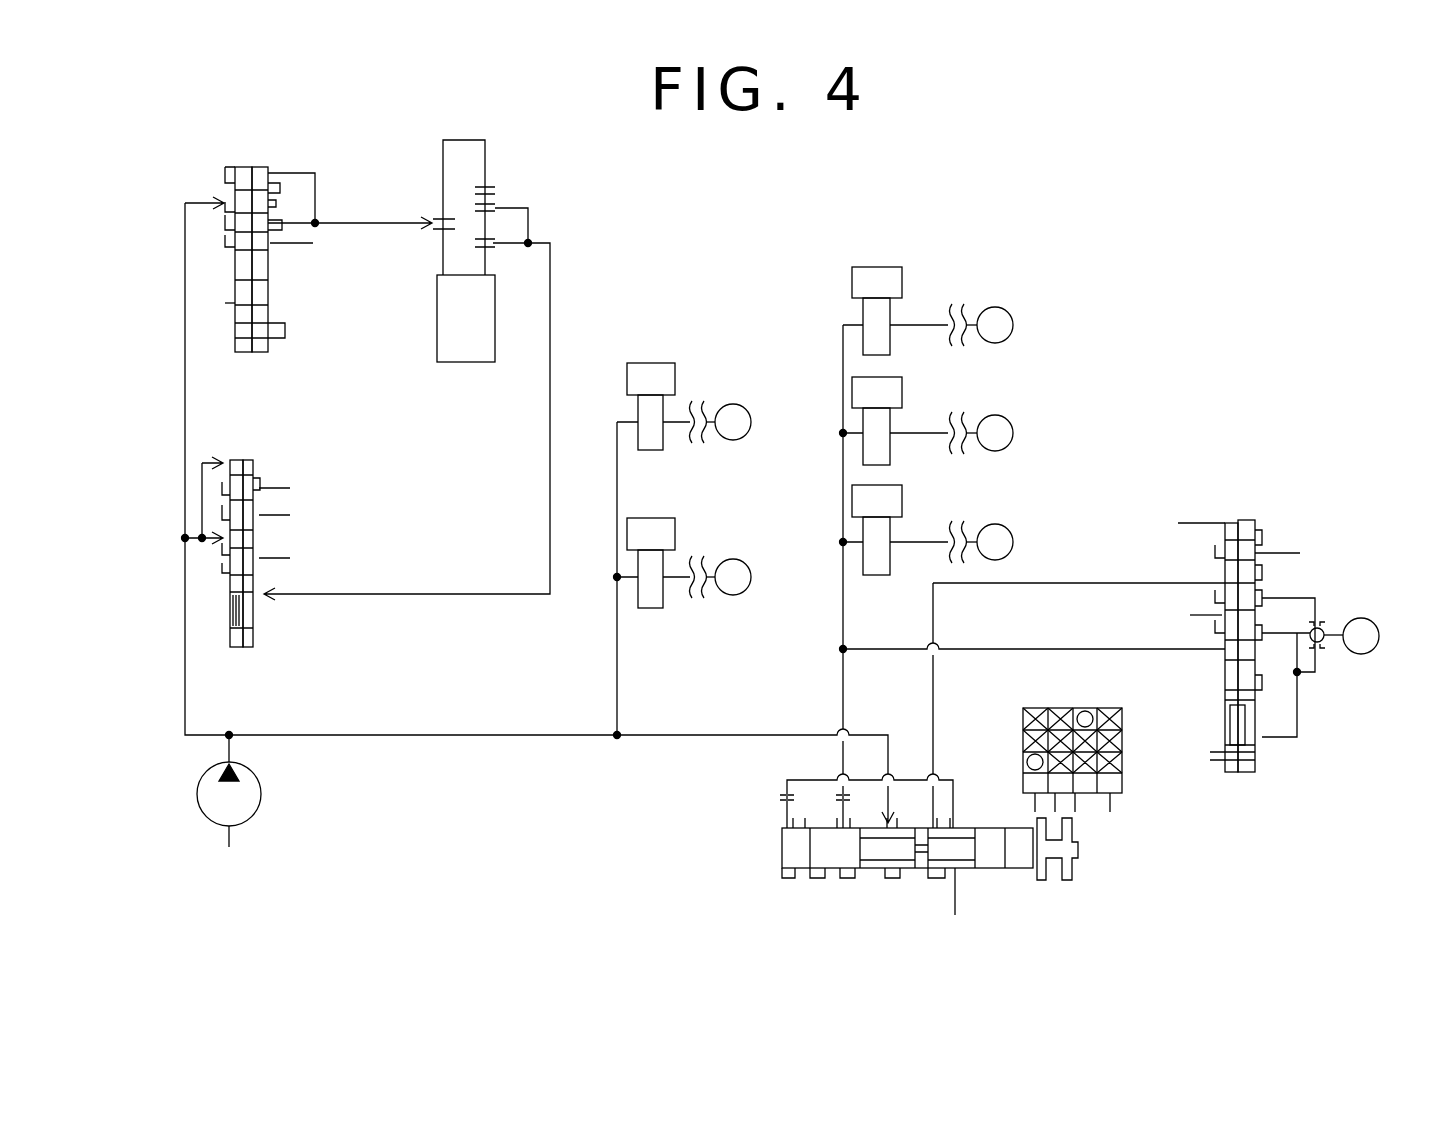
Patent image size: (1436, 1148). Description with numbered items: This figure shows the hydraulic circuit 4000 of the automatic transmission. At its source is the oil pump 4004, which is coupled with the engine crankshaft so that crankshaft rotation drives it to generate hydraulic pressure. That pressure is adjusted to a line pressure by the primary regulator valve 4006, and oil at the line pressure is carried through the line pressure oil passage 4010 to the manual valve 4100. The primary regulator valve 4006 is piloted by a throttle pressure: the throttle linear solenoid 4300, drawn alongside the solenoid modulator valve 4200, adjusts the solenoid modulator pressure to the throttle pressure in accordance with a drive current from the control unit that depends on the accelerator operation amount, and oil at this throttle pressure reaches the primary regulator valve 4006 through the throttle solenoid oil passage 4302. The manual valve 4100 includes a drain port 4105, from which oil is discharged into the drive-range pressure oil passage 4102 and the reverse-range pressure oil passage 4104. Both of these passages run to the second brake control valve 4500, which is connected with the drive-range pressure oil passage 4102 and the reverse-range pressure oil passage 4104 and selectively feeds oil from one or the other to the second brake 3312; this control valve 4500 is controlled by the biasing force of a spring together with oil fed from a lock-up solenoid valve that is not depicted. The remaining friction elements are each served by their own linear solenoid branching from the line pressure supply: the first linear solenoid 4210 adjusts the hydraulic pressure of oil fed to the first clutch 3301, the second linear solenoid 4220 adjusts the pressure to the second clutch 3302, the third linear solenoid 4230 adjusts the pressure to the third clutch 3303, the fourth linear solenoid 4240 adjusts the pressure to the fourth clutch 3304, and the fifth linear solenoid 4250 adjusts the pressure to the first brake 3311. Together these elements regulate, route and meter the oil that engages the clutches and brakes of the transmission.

The hydraulic circuit 4000 is at (808, 198).
The oil pump 4004 is at (258, 777).
The primary regulator valve 4006 is at (238, 650).
The line pressure oil passage 4010 is at (273, 733).
The solenoid modulator valve 4200 is at (255, 367).
The SLT linear solenoid 4300 is at (437, 307).
The SLT oil passage 4302 is at (503, 597).
The SL4 linear solenoid 4240 is at (650, 363).
The SL5 linear solenoid 4250 is at (650, 518).
The C4 clutch 3304 is at (747, 406).
The B1 brake 3311 is at (747, 561).
The SL1 linear solenoid 4210 is at (902, 288).
The SL2 linear solenoid 4220 is at (938, 388).
The SL3 linear solenoid 4230 is at (902, 506).
The C1 clutch 3301 is at (1008, 309).
The C2 clutch 3302 is at (1008, 422).
The C3 clutch 3303 is at (1008, 529).
The manual valve 4100 is at (762, 866).
The D-range pressure oil passage 4102 is at (883, 698).
The R-range pressure oil passage 4104 is at (973, 692).
The drain port 4105 is at (966, 890).
The B2 control valve 4500 is at (1287, 528).
The B2 brake 3312 is at (1357, 657).